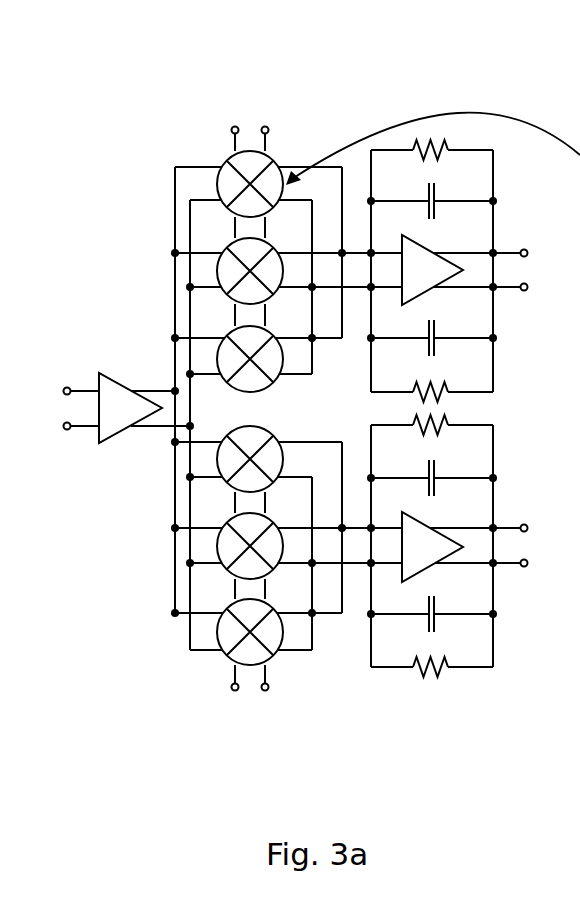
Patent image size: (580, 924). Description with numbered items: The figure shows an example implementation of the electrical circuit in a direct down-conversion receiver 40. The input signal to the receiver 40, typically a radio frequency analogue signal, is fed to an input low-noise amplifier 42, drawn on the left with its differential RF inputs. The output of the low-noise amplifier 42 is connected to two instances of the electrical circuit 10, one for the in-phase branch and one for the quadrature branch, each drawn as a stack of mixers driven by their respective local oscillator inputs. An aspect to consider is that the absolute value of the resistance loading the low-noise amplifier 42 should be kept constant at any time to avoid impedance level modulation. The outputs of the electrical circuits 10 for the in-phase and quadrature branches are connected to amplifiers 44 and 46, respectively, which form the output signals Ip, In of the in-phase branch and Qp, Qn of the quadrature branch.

The electrical circuit 10 is at (150, 240).
The direct down-conversion receiver 40 is at (347, 80).
The input low-noise amplifier (LNA) 42 is at (107, 390).
The amplifier 44 is at (443, 268).
The amplifier 46 is at (430, 545).